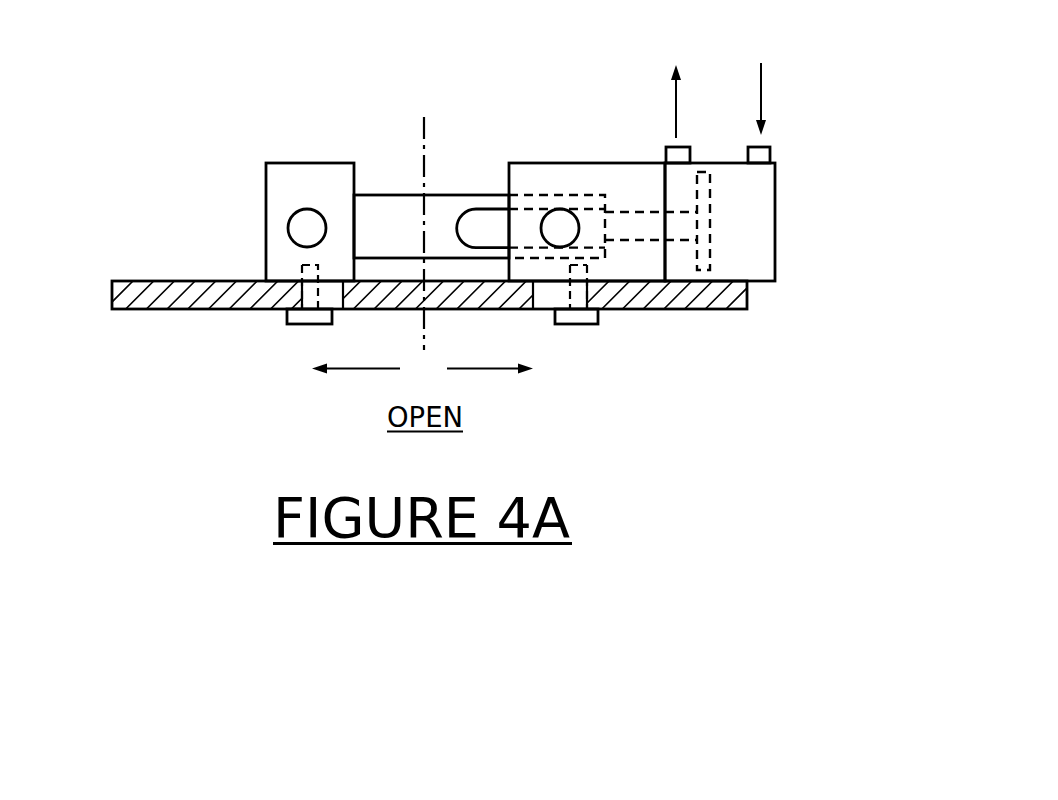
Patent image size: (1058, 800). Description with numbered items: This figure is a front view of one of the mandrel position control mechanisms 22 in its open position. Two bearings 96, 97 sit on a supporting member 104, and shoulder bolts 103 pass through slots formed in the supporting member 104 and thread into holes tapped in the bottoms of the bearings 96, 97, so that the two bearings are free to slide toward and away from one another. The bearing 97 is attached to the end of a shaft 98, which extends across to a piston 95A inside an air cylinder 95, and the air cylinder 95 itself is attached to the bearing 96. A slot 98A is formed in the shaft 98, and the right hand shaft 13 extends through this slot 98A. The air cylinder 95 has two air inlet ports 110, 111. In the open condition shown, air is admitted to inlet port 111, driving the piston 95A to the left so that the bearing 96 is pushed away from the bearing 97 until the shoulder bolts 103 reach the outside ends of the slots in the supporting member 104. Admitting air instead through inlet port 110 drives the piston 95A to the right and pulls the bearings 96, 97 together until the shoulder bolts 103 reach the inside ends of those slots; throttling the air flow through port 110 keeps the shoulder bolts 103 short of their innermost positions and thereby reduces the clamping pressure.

The right hand shaft 13 is at (307, 222).
The mandrel position control mechanism 22 is at (825, 61).
The air cylinder 95 is at (775, 247).
The piston 95A is at (710, 187).
The bearing 96 is at (627, 163).
The bearing 97 is at (266, 200).
The shaft 98 is at (391, 195).
The slot 98A is at (483, 223).
The shoulder bolts 103 is at (305, 325).
The supporting member 104 is at (110, 295).
The air inlet port 110 is at (683, 147).
The air inlet port 111 is at (771, 153).